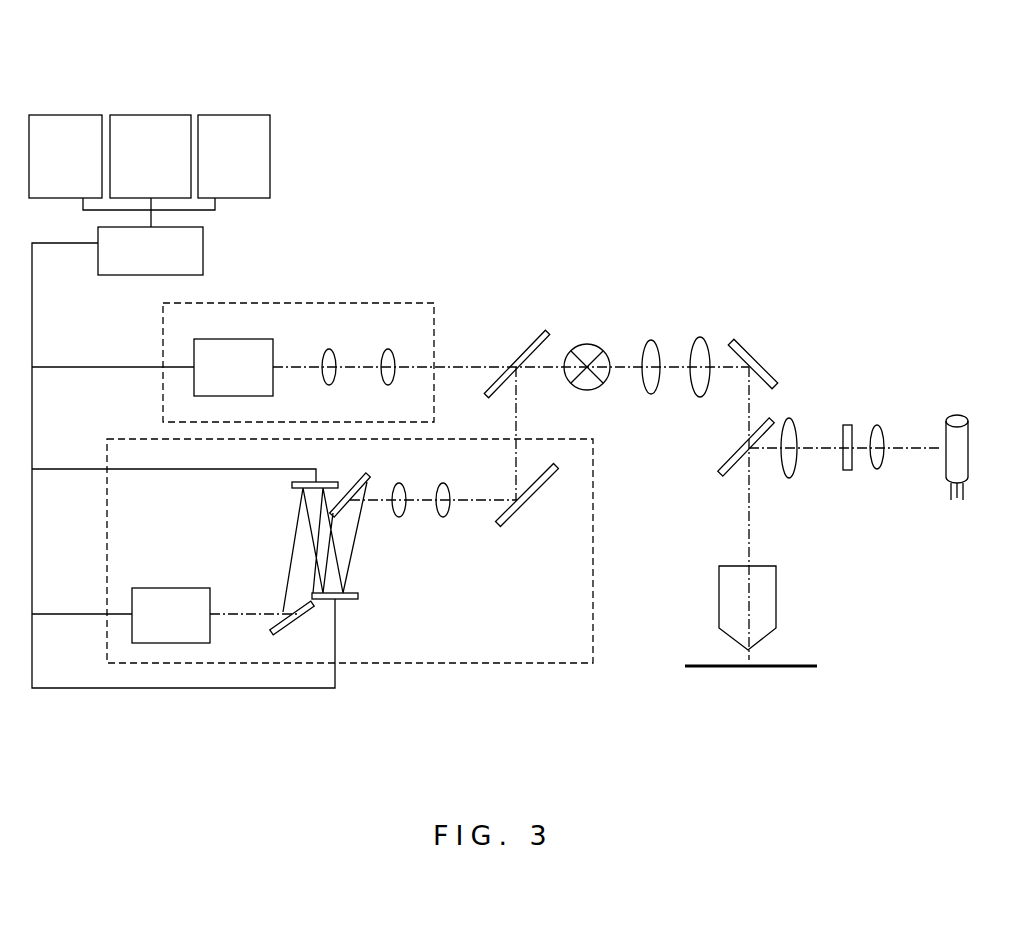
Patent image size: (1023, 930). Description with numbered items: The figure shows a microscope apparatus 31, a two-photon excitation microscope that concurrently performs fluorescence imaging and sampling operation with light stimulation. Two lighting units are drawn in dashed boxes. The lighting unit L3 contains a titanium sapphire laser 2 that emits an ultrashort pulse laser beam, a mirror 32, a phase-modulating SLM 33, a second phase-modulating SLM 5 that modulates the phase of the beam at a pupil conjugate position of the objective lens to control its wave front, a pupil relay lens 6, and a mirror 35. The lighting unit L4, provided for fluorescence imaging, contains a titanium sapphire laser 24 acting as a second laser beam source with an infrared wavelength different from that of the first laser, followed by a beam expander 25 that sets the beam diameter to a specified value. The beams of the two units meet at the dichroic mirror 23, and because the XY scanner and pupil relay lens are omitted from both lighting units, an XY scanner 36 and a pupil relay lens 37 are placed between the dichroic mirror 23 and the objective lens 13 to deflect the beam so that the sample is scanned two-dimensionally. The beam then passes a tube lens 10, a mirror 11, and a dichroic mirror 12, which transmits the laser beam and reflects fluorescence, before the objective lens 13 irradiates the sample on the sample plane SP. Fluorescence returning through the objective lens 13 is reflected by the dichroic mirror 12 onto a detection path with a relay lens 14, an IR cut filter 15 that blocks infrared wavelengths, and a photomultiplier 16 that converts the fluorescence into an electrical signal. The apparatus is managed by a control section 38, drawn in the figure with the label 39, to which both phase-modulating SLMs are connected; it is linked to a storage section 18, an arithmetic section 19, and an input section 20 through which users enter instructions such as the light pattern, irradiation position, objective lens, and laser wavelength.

The microscope apparatus 31 is at (970, 74).
The storage section 18 is at (88, 113).
The arithmetic section 19 is at (150, 113).
The input section 20 is at (218, 113).
The control section 39 is at (203, 233).
The lighting unit L4 is at (313, 303).
The titanium sapphire laser 24 is at (232, 339).
The beam expander 25 is at (318, 349).
The dichroic mirror 23 is at (545, 332).
The pupil relay lens 37 is at (587, 344).
The control section 38 is at (652, 340).
The tube lens 10 is at (701, 337).
The mirror 11 is at (745, 341).
The dichroic mirror 12 is at (728, 453).
The relay lens 14 is at (893, 481).
The IR cut filter 15 is at (846, 425).
The photomultiplier 16 is at (957, 421).
The objective lens 13 is at (776, 575).
The sample plane SP is at (797, 663).
The lighting unit L3 is at (497, 664).
The titanium sapphire laser 2 is at (173, 588).
The mirror 32 is at (298, 620).
The phase-modulating SLM 33 is at (292, 485).
The phase-modulating SLM 5 is at (358, 596).
The mirror 35 is at (372, 470).
The pupil relay lens 6 is at (378, 521).
The XY scanner 36 is at (535, 498).